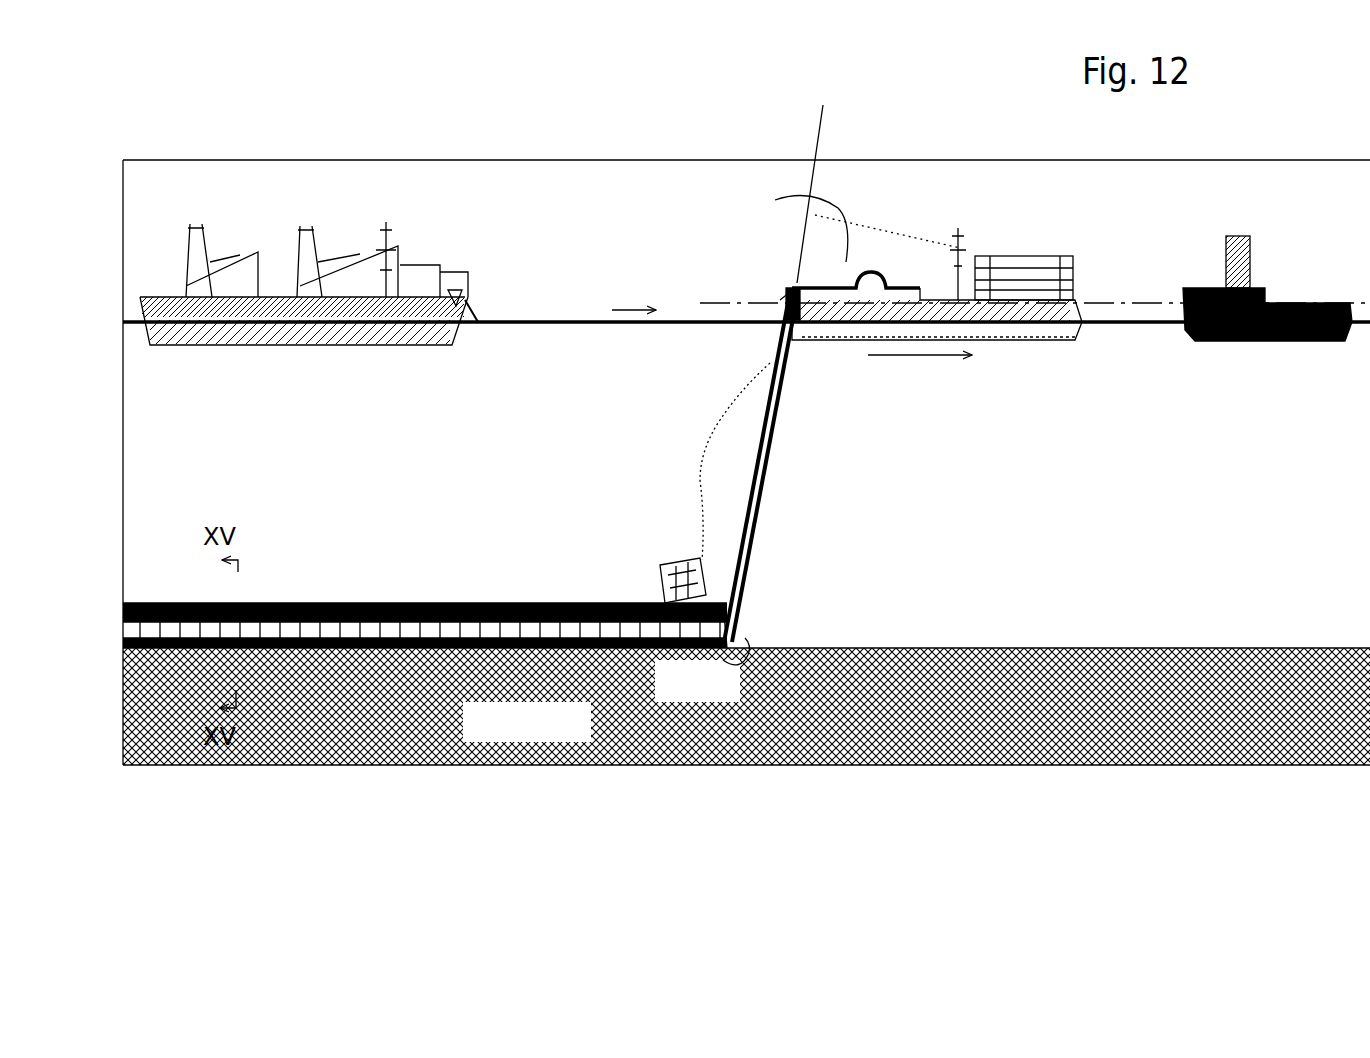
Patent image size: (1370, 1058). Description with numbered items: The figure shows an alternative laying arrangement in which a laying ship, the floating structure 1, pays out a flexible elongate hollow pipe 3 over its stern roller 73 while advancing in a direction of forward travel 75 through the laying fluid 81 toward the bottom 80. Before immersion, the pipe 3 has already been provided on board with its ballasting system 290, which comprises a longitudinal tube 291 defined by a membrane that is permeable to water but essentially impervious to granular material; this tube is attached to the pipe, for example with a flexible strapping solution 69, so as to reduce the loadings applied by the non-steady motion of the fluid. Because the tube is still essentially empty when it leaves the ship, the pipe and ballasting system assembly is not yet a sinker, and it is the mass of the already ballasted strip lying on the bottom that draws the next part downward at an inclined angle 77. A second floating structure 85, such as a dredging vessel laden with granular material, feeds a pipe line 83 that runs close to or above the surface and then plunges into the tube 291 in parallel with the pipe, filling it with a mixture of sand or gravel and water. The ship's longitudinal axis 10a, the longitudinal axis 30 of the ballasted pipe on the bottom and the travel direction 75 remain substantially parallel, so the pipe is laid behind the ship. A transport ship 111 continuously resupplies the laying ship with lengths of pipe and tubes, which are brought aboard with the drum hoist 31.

The floating structure 1 is at (1048, 240).
The elongate hollow pipe 3 is at (895, 285).
The longitudinal axis of the ship 10a is at (702, 300).
The longitudinal axis 30 is at (730, 617).
The drum hoist 31 is at (848, 222).
The flexible strapping solution 69 is at (782, 388).
The stern roller 73 is at (790, 300).
The direction of forward travel 75 is at (915, 362).
The inclined angle 77 is at (824, 114).
The bottom 80 is at (758, 650).
The laying fluid 81 is at (746, 408).
The pipe line 83 is at (536, 326).
The floating structure 85 is at (264, 355).
The transport ship 111 is at (1218, 345).
The ballasting system 290 is at (528, 646).
The tube 291 is at (762, 493).